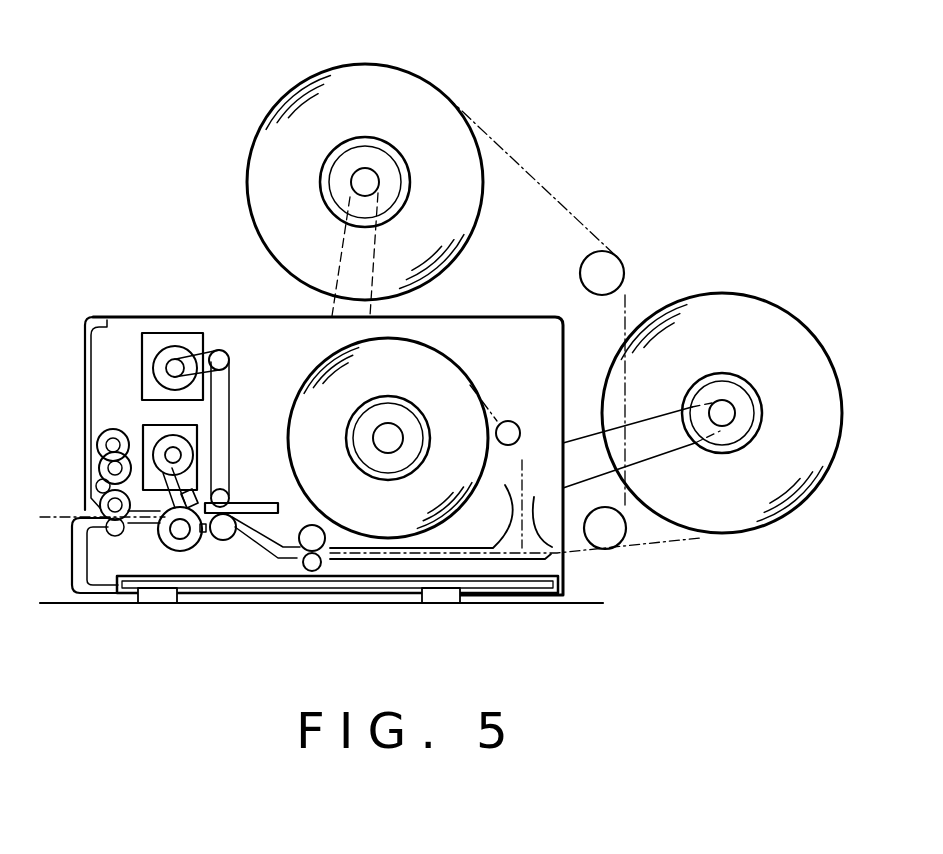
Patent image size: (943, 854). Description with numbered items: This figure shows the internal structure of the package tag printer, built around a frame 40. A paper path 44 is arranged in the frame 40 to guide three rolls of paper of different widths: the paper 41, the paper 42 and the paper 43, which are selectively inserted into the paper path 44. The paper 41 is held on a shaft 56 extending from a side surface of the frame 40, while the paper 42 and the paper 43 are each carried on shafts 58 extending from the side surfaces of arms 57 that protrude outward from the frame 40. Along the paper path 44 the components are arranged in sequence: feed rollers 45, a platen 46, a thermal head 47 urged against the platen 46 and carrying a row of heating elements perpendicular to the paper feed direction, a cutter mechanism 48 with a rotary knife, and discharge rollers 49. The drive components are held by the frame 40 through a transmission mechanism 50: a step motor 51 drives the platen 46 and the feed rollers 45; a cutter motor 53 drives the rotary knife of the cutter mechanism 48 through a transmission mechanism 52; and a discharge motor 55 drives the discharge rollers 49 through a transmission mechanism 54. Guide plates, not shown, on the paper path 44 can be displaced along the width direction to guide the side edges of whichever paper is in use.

The frame 40 is at (128, 328).
The paper 41 is at (460, 370).
The paper 42 is at (400, 70).
The paper 43 is at (686, 302).
The paper path 44 is at (488, 557).
The feed rollers 45 is at (313, 574).
The platen 46 is at (230, 545).
The thermal head 47 is at (243, 500).
The cutter mechanism 48 is at (190, 553).
The discharge rollers 49 is at (100, 507).
The transmission mechanism 50 is at (238, 372).
The step motor 51 is at (175, 350).
The transmission mechanism 52 is at (157, 503).
The cutter motor 53 is at (165, 445).
The transmission mechanism 54 is at (99, 471).
The discharge motor 55 is at (98, 440).
The shaft 56 is at (240, 509).
The arms 57 is at (383, 310).
The shafts 58 is at (355, 181).